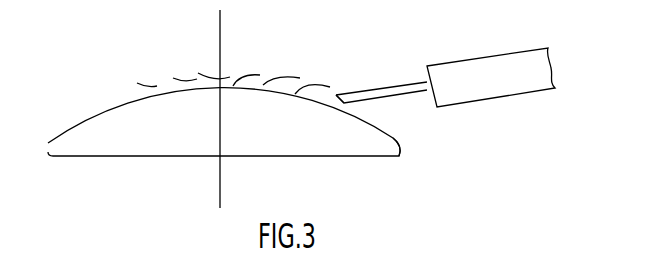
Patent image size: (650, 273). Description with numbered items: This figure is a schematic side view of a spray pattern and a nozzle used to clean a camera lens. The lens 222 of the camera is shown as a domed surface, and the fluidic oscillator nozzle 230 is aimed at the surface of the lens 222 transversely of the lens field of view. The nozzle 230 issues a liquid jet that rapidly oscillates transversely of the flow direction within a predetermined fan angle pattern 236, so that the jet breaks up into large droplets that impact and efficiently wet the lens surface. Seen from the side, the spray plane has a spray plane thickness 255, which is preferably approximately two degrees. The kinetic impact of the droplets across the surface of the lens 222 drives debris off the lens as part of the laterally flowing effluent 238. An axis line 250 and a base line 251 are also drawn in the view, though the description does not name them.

The lens 222 is at (97, 115).
The corneal base / eye surface 251 is at (400, 143).
The optical axis 250 is at (220, 20).
The laterally flowing effluent 238 is at (180, 73).
The fan angle pattern 236 is at (400, 80).
The spray plane thickness 255 is at (362, 89).
The nozzle 230 is at (498, 55).